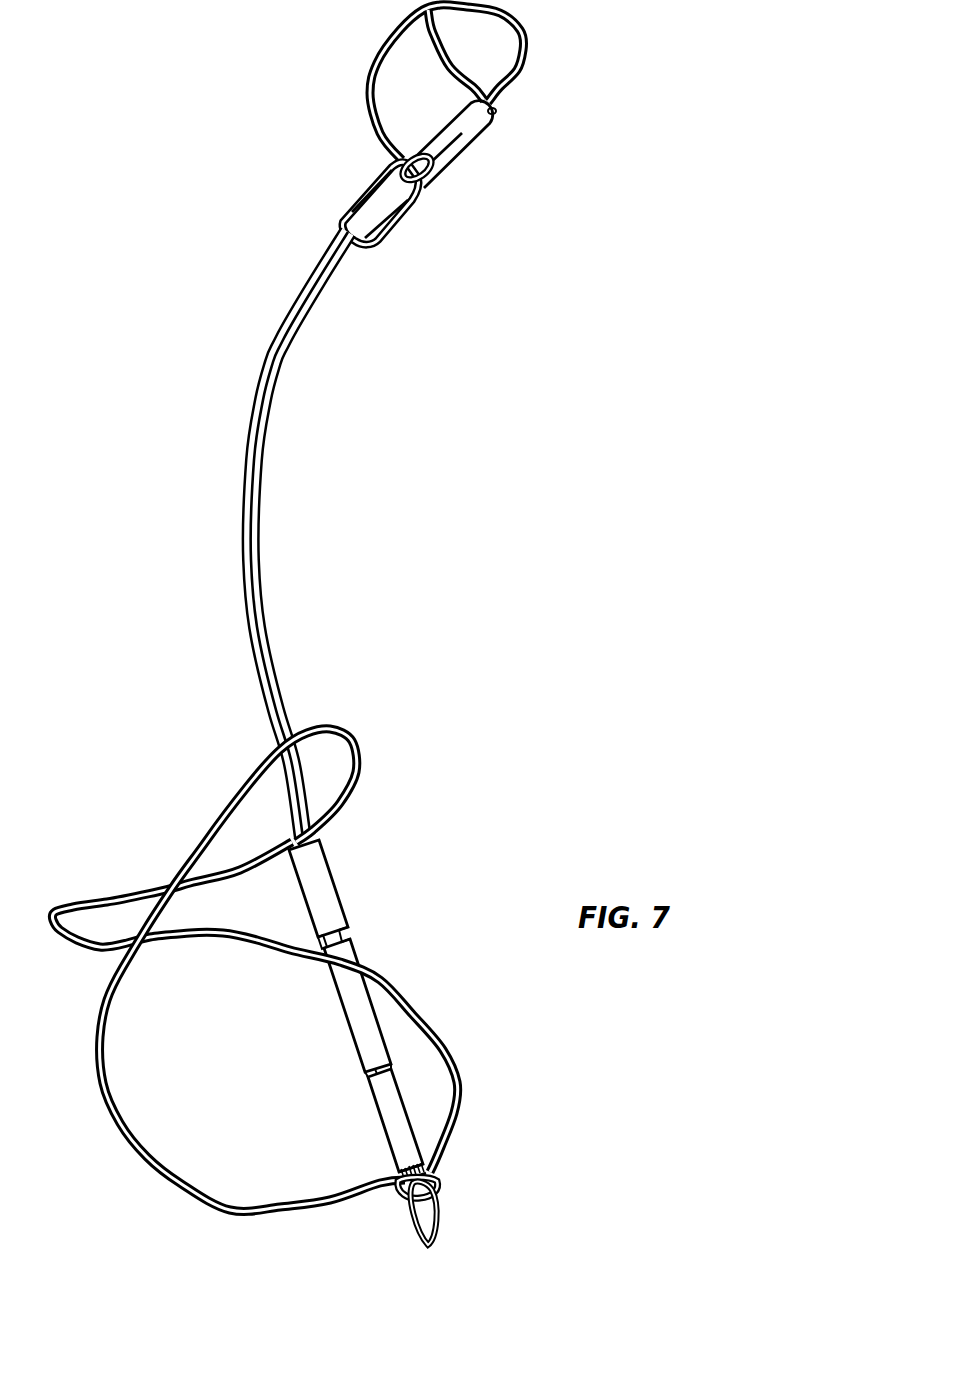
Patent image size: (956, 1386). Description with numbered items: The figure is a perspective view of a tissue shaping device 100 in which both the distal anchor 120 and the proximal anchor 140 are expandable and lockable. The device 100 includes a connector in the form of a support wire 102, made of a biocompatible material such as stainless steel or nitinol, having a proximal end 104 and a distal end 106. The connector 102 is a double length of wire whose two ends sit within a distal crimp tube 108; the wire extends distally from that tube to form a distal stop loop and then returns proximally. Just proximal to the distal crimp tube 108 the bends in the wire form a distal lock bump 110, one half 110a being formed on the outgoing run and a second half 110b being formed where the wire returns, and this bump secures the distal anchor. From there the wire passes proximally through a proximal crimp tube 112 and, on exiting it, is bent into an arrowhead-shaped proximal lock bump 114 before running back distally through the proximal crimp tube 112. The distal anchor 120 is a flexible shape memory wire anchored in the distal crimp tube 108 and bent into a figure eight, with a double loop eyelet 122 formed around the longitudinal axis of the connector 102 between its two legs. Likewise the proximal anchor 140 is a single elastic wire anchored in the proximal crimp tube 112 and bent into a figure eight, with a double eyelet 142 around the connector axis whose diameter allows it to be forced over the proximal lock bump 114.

The tissue shaping device 100 is at (542, 449).
The support wire 102 is at (311, 535).
The proximal end 104 is at (308, 1058).
The distal end 106 is at (504, 144).
The distal crimp tube 108 is at (483, 171).
The distal lock bump 110 is at (307, 203).
The half of the distal lock bump 110a is at (323, 174).
The second half of the distal lock bump 110b is at (416, 256).
The proximal crimp tube 112 is at (377, 1006).
The proximal lock bump 114 is at (388, 1243).
The distal anchor 120 is at (493, 80).
The double loop eyelet 122 is at (460, 206).
The proximal anchor 140 is at (286, 961).
The double eyelet 142 is at (472, 1158).